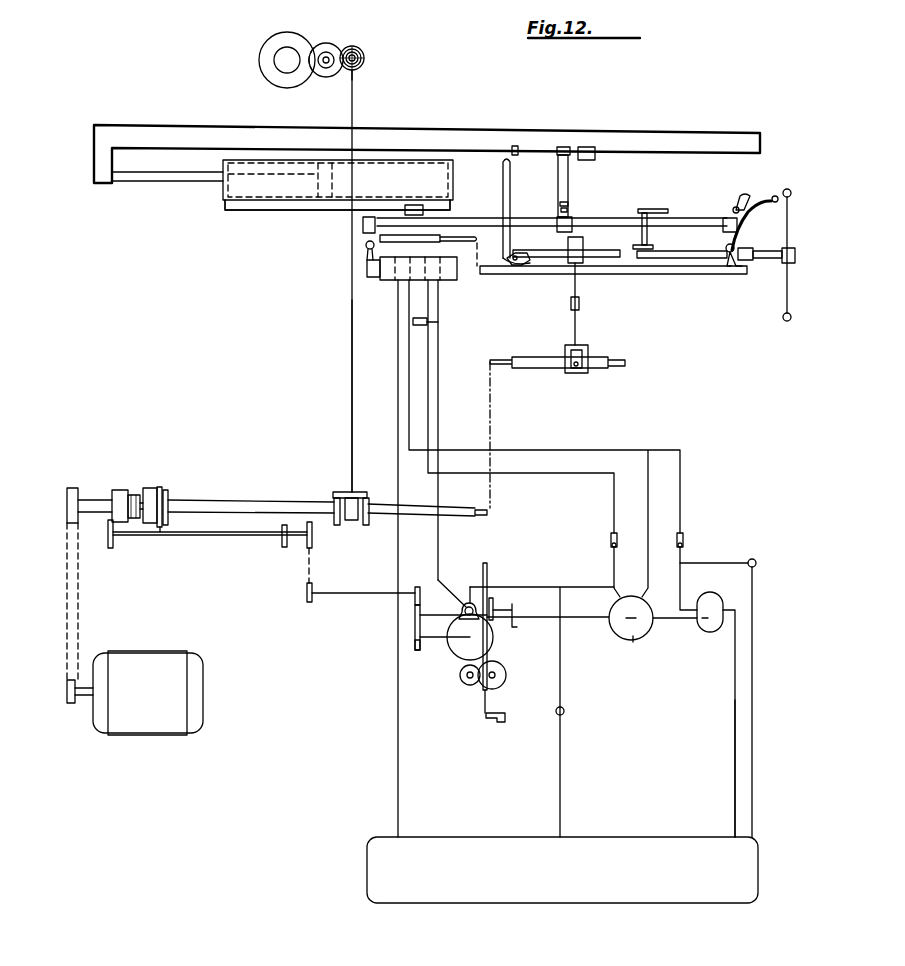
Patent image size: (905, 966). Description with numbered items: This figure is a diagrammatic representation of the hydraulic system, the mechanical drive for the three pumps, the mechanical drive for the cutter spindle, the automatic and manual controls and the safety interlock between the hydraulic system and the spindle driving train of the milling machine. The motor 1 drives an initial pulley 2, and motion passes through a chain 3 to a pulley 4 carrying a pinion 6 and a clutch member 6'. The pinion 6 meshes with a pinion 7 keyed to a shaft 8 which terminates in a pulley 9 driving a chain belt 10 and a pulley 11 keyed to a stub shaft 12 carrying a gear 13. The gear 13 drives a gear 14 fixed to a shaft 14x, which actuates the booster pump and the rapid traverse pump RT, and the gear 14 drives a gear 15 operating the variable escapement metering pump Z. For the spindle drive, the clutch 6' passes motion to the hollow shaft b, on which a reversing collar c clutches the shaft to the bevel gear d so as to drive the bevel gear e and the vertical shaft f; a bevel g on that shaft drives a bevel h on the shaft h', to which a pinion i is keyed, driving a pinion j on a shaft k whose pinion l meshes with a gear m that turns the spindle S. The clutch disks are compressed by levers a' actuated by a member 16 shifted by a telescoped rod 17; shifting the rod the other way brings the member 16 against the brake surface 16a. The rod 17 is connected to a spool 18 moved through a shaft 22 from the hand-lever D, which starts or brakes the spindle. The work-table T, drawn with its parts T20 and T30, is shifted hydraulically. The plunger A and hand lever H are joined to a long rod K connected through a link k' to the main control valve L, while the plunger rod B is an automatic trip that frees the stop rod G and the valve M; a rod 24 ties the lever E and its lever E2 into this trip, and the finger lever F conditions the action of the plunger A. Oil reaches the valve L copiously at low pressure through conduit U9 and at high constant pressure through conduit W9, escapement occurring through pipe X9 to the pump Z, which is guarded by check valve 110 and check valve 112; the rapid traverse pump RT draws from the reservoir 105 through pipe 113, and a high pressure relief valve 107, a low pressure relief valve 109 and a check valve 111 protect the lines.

The gear m is at (261, 40).
The cutter spindle S is at (285, 61).
The pinion l is at (316, 45).
The pinion j is at (329, 43).
The shaft k is at (321, 80).
The bevel gear g is at (361, 49).
The pinion i is at (364, 55).
The bevel gear h is at (378, 271).
The shaft h' is at (367, 78).
The work-table T is at (133, 127).
The table slide T20 is at (333, 178).
The table bracket T30 is at (222, 196).
The auxiliary supplemental valve M is at (362, 237).
The ball and socket link k' is at (351, 264).
The main control valve L is at (455, 280).
The escapement pipe X9 is at (440, 408).
The check valve 110 is at (412, 323).
The low pressure conduit U9 is at (597, 449).
The high pressure conduit W9 is at (561, 474).
The check valve 112 is at (610, 540).
The check valve 111 is at (684, 541).
The low pressure relief valve 109 is at (756, 566).
The vertical shaft f is at (349, 408).
The spool 18 is at (585, 373).
The telescoped rod 17 is at (494, 361).
The plunger rod B is at (502, 177).
The plunger A is at (570, 177).
The long rod K is at (618, 222).
The finger lever F is at (650, 208).
The connecting rod 24 is at (548, 252).
The shaft 22 is at (652, 249).
The stop rod G is at (630, 275).
The hand-lever E is at (745, 226).
The hand lever H is at (733, 193).
The lever E2 is at (733, 270).
The hand-lever D is at (785, 292).
The pulley 4 is at (74, 488).
The pinion 6 is at (111, 493).
The clutch member 6' is at (129, 491).
The levers a' is at (149, 493).
The shifting member 16 is at (165, 490).
The hollow shaft b is at (232, 500).
The pinion 7 is at (114, 540).
The shaft 8 is at (228, 537).
The brake surface 16a is at (160, 533).
The pulley 9 is at (313, 547).
The chain belt 10 is at (311, 572).
The pulley 11 is at (306, 600).
The stub shaft 12 is at (362, 596).
The chain 3 is at (80, 610).
The motor 1 is at (148, 693).
The initial pulley 2 is at (70, 705).
The bevel gear e is at (348, 491).
The bevel gear d is at (333, 496).
The reversing collar c is at (351, 521).
The gear 13 is at (422, 582).
The gear 14 is at (415, 616).
The gear 15 is at (414, 657).
The variable escapement metering pump Z is at (490, 638).
The shaft 14x is at (589, 620).
The rapid traverse pump RT is at (710, 633).
The high pressure relief valve 107 is at (565, 711).
The pipe 113 is at (733, 744).
The reservoir 105 is at (562, 870).